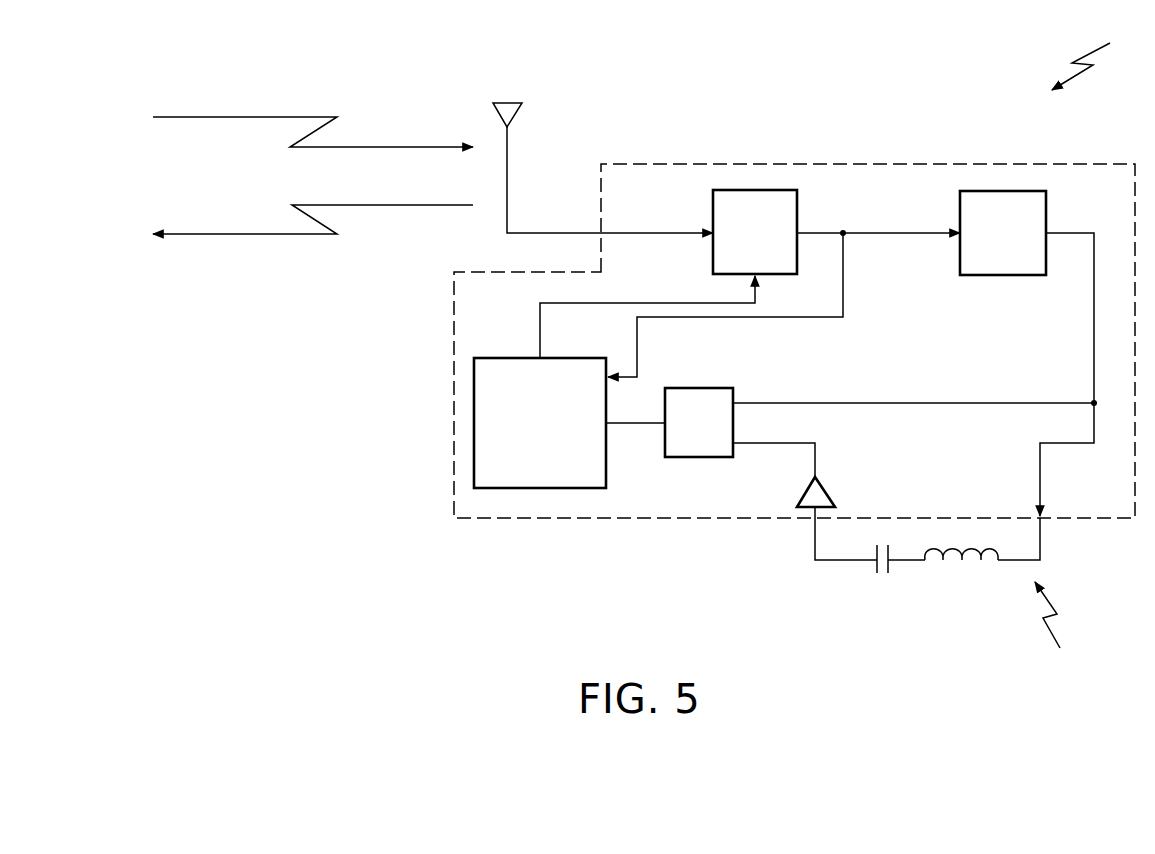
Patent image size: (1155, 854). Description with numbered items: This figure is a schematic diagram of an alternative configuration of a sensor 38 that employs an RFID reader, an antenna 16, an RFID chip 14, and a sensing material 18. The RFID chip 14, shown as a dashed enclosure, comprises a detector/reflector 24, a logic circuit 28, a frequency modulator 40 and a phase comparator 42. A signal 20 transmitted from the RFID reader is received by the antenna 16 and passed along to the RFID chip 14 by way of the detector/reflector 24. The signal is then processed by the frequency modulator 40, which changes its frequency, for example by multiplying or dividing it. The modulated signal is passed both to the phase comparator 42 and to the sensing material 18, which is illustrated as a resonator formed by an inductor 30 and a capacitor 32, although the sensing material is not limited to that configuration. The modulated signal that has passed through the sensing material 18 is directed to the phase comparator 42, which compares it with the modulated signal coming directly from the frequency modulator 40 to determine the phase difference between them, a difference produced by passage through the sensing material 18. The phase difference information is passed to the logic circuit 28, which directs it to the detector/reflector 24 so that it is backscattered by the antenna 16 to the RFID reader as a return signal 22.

The RFID chip 14 is at (842, 163).
The antenna 16 is at (508, 150).
The sensing material 18 is at (939, 578).
The signal 20 is at (304, 115).
The return signal 22 is at (315, 237).
The detector/reflector 24 is at (798, 201).
The logic circuit 28 is at (607, 476).
The inductor 30 is at (957, 567).
The capacitor 32 is at (875, 574).
The sensor 38 is at (1099, 58).
The frequency modulator 40 is at (958, 198).
The phase comparator 42 is at (700, 388).